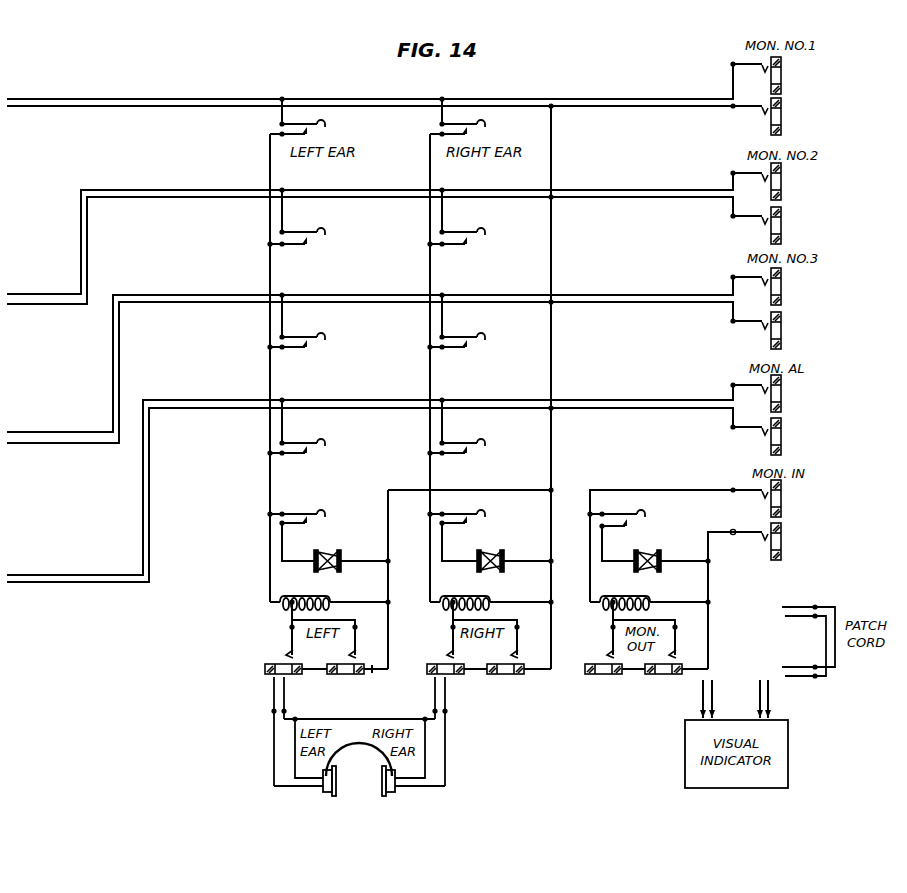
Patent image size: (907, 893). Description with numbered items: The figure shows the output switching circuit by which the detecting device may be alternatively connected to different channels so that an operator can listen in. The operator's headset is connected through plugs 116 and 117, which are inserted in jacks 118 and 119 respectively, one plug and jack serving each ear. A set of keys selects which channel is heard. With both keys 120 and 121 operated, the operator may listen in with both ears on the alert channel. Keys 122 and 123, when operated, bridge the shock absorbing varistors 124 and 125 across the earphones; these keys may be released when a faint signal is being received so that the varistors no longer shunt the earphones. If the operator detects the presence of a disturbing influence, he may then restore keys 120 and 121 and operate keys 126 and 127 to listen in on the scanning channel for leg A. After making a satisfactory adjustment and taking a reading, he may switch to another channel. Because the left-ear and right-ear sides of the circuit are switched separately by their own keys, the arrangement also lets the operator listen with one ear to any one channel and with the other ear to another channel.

The plug 116 is at (285, 696).
The plug 117 is at (446, 696).
The jack 118 is at (265, 664).
The jack 119 is at (427, 664).
The key 120 is at (327, 440).
The key 121 is at (487, 440).
The key 122 is at (327, 512).
The key 123 is at (487, 512).
The shock absorbing varistor 124 is at (331, 552).
The shock absorbing varistor 125 is at (494, 552).
The key 126 is at (328, 126).
The key 127 is at (488, 126).